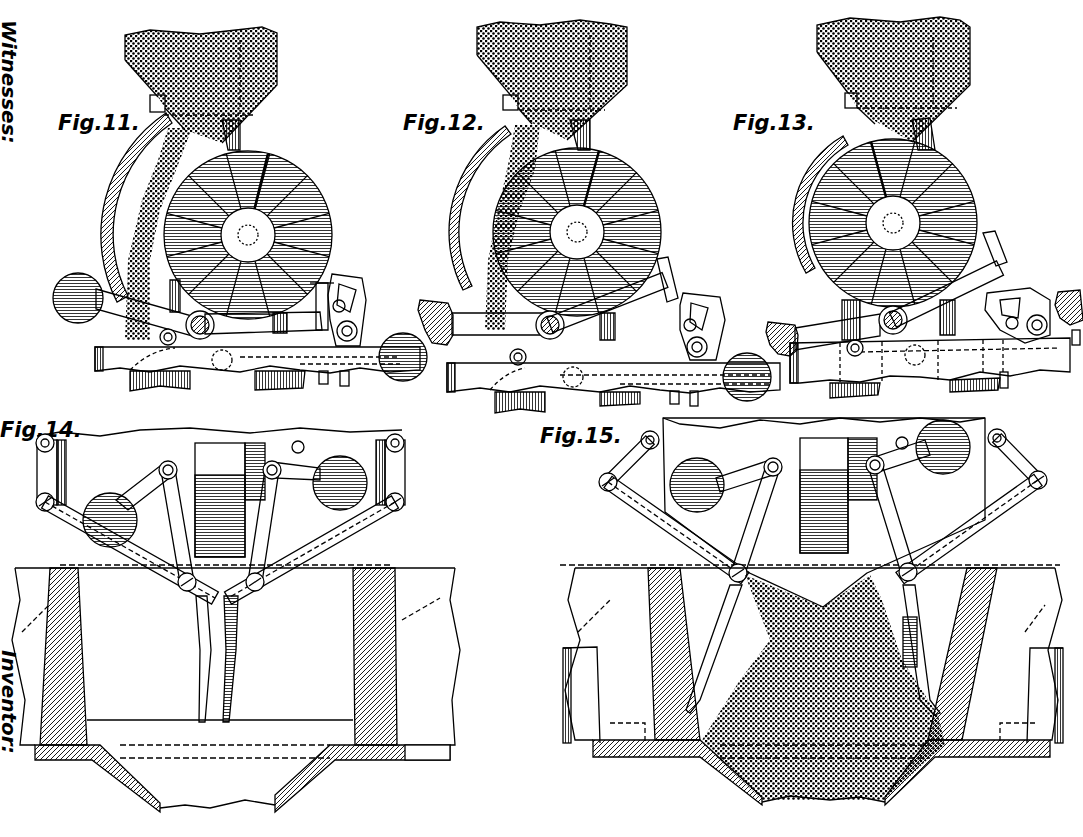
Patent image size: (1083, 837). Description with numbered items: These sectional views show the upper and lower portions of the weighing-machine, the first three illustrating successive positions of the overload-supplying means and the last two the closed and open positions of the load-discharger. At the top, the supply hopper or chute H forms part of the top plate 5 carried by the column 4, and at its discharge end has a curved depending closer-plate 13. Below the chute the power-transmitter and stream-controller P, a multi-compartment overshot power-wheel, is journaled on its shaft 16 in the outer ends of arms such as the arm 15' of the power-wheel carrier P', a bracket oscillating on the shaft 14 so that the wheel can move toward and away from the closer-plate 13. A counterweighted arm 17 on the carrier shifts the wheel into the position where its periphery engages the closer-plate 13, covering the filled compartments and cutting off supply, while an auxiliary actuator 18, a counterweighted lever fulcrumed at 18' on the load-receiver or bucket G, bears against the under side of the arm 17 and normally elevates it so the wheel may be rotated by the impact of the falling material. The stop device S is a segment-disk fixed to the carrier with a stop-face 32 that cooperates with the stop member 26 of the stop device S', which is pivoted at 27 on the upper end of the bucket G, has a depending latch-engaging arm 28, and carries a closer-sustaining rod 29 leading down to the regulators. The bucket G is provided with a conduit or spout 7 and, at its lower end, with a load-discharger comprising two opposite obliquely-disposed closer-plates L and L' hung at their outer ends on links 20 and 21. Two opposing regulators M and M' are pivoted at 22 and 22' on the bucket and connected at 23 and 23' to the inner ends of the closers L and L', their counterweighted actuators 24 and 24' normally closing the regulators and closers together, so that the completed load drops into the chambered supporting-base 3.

In FIG. 11, the supply hopper or chute H is at (278, 52).
In FIG. 12, the supply hopper or chute H is at (628, 52).
In FIG. 13, the supply hopper or chute H is at (971, 52).
In FIG. 11, the top plate 5 is at (152, 97).
In FIG. 12, the top plate 5 is at (504, 98).
In FIG. 13, the top plate 5 is at (845, 100).
In FIG. 11, the end frame or column 4 is at (242, 140).
In FIG. 12, the end frame or column 4 is at (592, 137).
In FIG. 13, the end frame or column 4 is at (936, 141).
In FIG. 11, the closer-plate 13 is at (112, 188).
In FIG. 12, the closer-plate 13 is at (470, 176).
In FIG. 13, the closer-plate 13 is at (806, 186).
In FIG. 11, the power-transmitter and stream-controller P is at (248, 235).
In FIG. 12, the power-transmitter and stream-controller P is at (582, 232).
In FIG. 13, the power-transmitter and stream-controller P is at (896, 223).
In FIG. 11, the shaft of the power-wheel 16 is at (272, 163).
In FIG. 12, the shaft of the power-wheel 16 is at (597, 190).
In FIG. 13, the shaft of the power-wheel 16 is at (905, 172).
In FIG. 11, the outwardly-extending arm 15' is at (144, 305).
In FIG. 12, the outwardly-extending arm 15' is at (500, 289).
In FIG. 13, the outwardly-extending arm 15' is at (837, 301).
In FIG. 11, the counterweighted arm 17 is at (78, 276).
In FIG. 12, the counterweighted arm 17 is at (446, 307).
In FIG. 13, the counterweighted arm 17 is at (800, 328).
In FIG. 11, the power-wheel carrier P' is at (191, 325).
In FIG. 12, the power-wheel carrier P' is at (538, 325).
In FIG. 13, the power-wheel carrier P' is at (881, 320).
In FIG. 11, the shaft 14 is at (162, 343).
In FIG. 12, the shaft 14 is at (528, 356).
In FIG. 11, the stop device S is at (263, 339).
In FIG. 12, the stop device S is at (607, 307).
In FIG. 13, the stop device S is at (947, 299).
In FIG. 11, the stop-face 32 is at (326, 284).
In FIG. 12, the stop-face 32 is at (661, 263).
In FIG. 13, the stop-face 32 is at (990, 234).
In FIG. 11, the stop member 26 is at (358, 290).
In FIG. 12, the stop member 26 is at (708, 297).
In FIG. 13, the stop member 26 is at (1000, 296).
In FIG. 11, the stop device S' is at (379, 297).
In FIG. 12, the stop device S' is at (729, 311).
In FIG. 13, the stop device S' is at (1022, 284).
In FIG. 11, the pivot 27 is at (357, 330).
In FIG. 12, the pivot 27 is at (709, 345).
In FIG. 13, the pivot 27 is at (1039, 315).
In FIG. 11, the auxiliary actuator 18 is at (400, 371).
In FIG. 12, the auxiliary actuator 18 is at (748, 384).
In FIG. 13, the auxiliary actuator 18 is at (1067, 289).
In FIG. 11, the latch-engaging arm 28 is at (345, 387).
In FIG. 12, the latch-engaging arm 28 is at (698, 398).
In FIG. 13, the latch-engaging arm 28 is at (1071, 340).
In FIG. 11, the closer-sustaining rod 29 is at (323, 381).
In FIG. 12, the closer-sustaining rod 29 is at (674, 392).
In FIG. 13, the closer-sustaining rod 29 is at (1010, 383).
In FIG. 11, the fulcrum 18' is at (216, 375).
In FIG. 12, the fulcrum 18' is at (565, 391).
In FIG. 13, the fulcrum 18' is at (910, 374).
In FIG. 11, the load-receiver or bucket G is at (95, 356).
In FIG. 12, the load-receiver or bucket G is at (613, 363).
In FIG. 13, the load-receiver or bucket G is at (930, 349).
In FIG. 14, the load-receiver or bucket G is at (220, 496).
In FIG. 15, the load-receiver or bucket G is at (810, 512).
In FIG. 14, the conduit or spout 7 is at (217, 450).
In FIG. 15, the conduit or spout 7 is at (822, 452).
In FIG. 14, the link 20 is at (40, 463).
In FIG. 15, the link 20 is at (633, 455).
In FIG. 14, the link 21 is at (405, 460).
In FIG. 15, the link 21 is at (1018, 462).
In FIG. 14, the closer or closer-plate L is at (130, 550).
In FIG. 15, the closer or closer-plate L is at (823, 528).
In FIG. 14, the closer or closer-plate L' is at (312, 550).
In FIG. 14, the pivot 22 is at (155, 515).
In FIG. 15, the pivot 22 is at (749, 503).
In FIG. 14, the pivot 22' is at (284, 505).
In FIG. 15, the pivot 22' is at (894, 500).
In FIG. 14, the counterweighted actuator 24 is at (104, 511).
In FIG. 15, the counterweighted actuator 24 is at (698, 495).
In FIG. 14, the counterweighted actuator 24' is at (340, 476).
In FIG. 15, the counterweighted actuator 24' is at (943, 459).
In FIG. 14, the pivotal connection 23 is at (165, 593).
In FIG. 15, the pivotal connection 23 is at (719, 581).
In FIG. 14, the pivotal connection 23' is at (274, 596).
In FIG. 15, the pivotal connection 23' is at (928, 579).
In FIG. 14, the regulator M is at (188, 659).
In FIG. 15, the regulator M is at (714, 649).
In FIG. 14, the regulator M' is at (245, 659).
In FIG. 15, the regulator M' is at (929, 650).
In FIG. 14, the supporting-base 3 is at (98, 652).
In FIG. 15, the supporting-base 3 is at (655, 655).